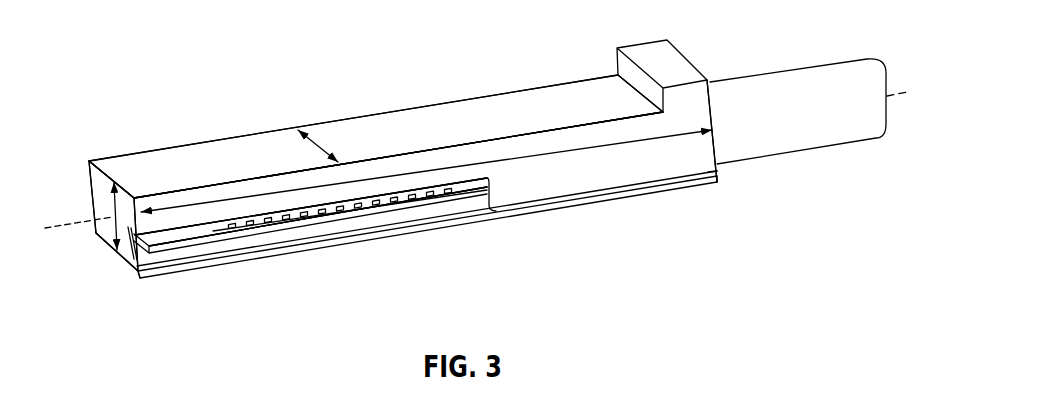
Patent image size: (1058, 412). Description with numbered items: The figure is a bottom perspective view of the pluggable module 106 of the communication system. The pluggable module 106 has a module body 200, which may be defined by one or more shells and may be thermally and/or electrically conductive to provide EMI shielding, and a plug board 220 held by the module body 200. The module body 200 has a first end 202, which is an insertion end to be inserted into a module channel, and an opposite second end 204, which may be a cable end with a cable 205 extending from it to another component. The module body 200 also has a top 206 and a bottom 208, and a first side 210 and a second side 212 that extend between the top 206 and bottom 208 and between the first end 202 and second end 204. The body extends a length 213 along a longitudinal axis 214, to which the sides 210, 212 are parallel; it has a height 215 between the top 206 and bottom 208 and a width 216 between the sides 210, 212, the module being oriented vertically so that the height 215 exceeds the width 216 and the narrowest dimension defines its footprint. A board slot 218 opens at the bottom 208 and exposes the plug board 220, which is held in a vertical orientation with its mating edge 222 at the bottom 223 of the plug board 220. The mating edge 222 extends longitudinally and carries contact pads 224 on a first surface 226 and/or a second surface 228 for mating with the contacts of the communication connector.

The pluggable module 106 is at (362, 86).
The module body 200 is at (490, 113).
The first end 202 is at (97, 228).
The second end 204 is at (717, 165).
The cable 205 is at (768, 90).
The top 206 is at (90, 198).
The bottom 208 is at (538, 182).
The first side 210 is at (257, 257).
The second side 212 is at (228, 150).
The length 213 is at (277, 187).
The longitudinal axis 214 is at (62, 226).
The height 215 is at (318, 146).
The width 216 is at (113, 232).
The board slot 218 is at (192, 252).
The plug board 220 is at (172, 232).
The mating edge 222 is at (313, 223).
The bottom of the plug board 223 is at (363, 213).
The contact pads 224 is at (383, 198).
The first surface 226 is at (217, 225).
The second surface 228 is at (228, 238).